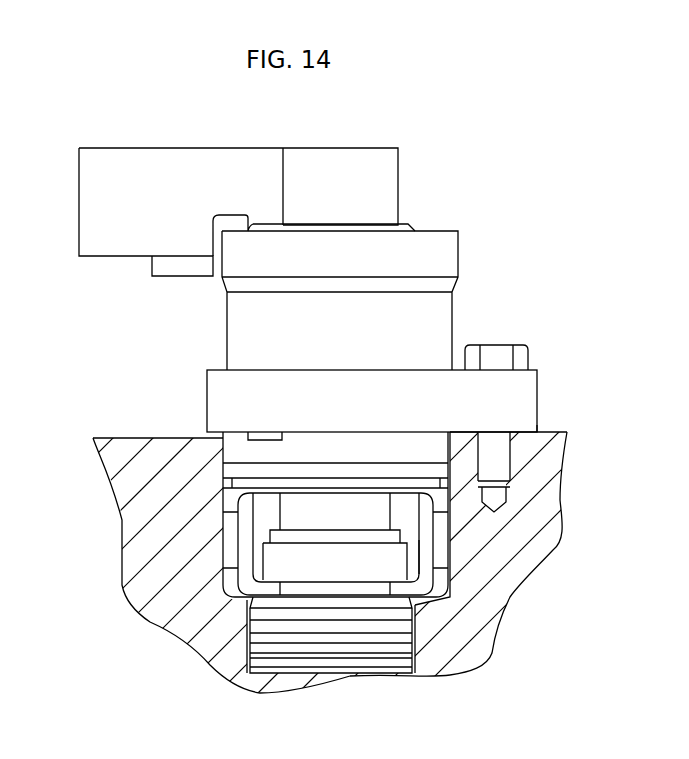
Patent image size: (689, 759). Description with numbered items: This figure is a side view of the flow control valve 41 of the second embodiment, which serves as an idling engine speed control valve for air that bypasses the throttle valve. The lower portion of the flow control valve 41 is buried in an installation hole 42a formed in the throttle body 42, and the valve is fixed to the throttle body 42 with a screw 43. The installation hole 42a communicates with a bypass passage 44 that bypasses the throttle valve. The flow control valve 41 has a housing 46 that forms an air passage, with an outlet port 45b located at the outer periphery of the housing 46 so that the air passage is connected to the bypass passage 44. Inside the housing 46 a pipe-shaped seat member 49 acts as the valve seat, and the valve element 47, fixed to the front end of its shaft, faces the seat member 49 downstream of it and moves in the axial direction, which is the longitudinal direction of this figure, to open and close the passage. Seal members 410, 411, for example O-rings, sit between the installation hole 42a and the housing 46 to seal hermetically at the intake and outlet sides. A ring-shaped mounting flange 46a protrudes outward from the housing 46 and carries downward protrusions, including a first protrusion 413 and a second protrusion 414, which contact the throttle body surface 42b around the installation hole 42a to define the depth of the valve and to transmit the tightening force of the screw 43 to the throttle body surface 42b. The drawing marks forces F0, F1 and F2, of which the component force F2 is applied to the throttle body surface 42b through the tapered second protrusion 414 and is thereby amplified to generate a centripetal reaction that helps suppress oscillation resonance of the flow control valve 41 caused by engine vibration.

The flow control valve 41 is at (432, 202).
The housing 46 is at (226, 328).
The mounting flange 46a is at (246, 382).
The second protrusion 414 is at (266, 437).
The screw 43 is at (529, 352).
The first protrusion 413 is at (523, 438).
The throttle body 42 is at (543, 465).
The installation hole 42a is at (440, 498).
The throttle body surface 42b is at (551, 433).
The seal member 410 is at (236, 473).
The valve element 47 is at (279, 522).
The seat member 49 is at (277, 563).
The seal member 411 is at (265, 631).
The bypass passage 44 is at (326, 672).
The outlet port 45b is at (408, 540).
The bolt axial force F0 is at (497, 432).
The reaction force F1 is at (520, 450).
The component force F2 is at (263, 485).